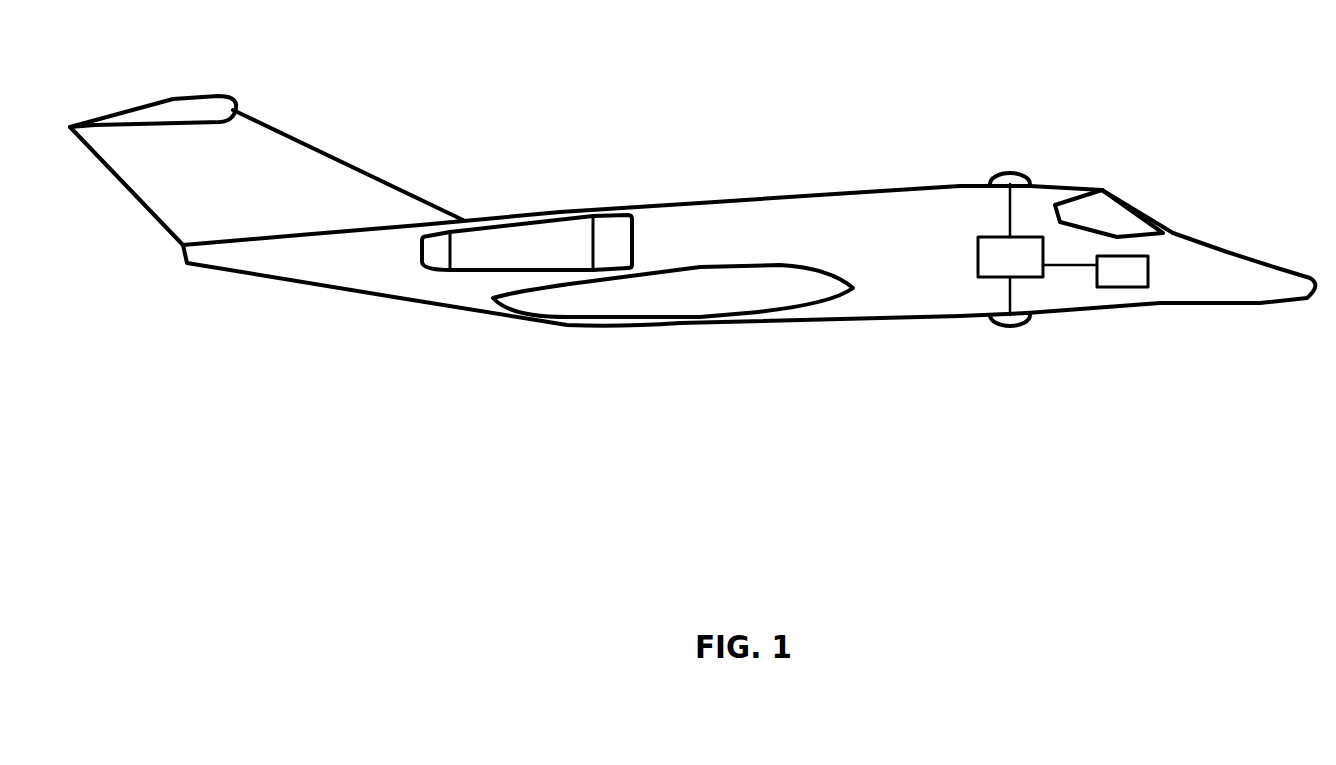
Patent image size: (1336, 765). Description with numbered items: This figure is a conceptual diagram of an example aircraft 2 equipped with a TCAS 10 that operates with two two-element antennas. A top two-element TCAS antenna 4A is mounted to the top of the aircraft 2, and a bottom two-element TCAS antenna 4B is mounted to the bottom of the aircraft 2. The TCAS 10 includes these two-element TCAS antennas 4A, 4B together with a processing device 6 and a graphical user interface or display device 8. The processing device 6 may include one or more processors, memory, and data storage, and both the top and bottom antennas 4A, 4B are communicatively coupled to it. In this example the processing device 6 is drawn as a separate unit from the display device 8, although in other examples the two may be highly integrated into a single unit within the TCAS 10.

The aircraft 2 is at (692, 193).
The top two-element TCAS antenna 4A is at (1010, 172).
The bottom two-element TCAS antenna 4B is at (1010, 330).
The processing device 6 is at (978, 255).
The display device 8 is at (1140, 272).
The TCAS 10 is at (1191, 303).